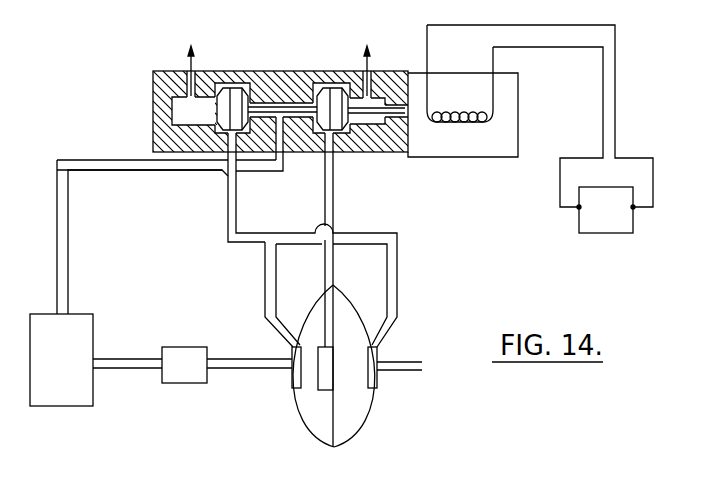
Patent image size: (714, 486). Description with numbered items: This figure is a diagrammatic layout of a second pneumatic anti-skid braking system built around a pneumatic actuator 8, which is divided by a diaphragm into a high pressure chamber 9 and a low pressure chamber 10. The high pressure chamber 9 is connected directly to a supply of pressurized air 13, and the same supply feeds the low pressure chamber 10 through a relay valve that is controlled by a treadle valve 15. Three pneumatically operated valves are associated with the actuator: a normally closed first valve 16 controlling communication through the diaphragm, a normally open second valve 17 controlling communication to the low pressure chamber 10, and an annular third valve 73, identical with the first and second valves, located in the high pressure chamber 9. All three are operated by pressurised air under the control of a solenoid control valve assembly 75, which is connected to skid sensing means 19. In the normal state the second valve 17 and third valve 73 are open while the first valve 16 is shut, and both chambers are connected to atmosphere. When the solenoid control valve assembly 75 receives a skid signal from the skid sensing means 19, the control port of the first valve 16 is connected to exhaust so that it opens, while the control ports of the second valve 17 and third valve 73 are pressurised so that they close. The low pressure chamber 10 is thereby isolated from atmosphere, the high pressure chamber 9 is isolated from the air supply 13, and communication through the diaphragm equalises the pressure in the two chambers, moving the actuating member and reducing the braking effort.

The solenoid control valve assembly 75 is at (268, 68).
The skid sensing means 19 is at (593, 225).
The supply of pressurized air 13 is at (72, 378).
The treadle valve 15 is at (197, 380).
The pneumatic actuator 8 is at (342, 369).
The high pressure chamber 9 is at (320, 401).
The low pressure chamber 10 is at (340, 423).
The annular third valve 73 is at (292, 363).
The first valve 16 is at (328, 353).
The second valve 17 is at (373, 383).